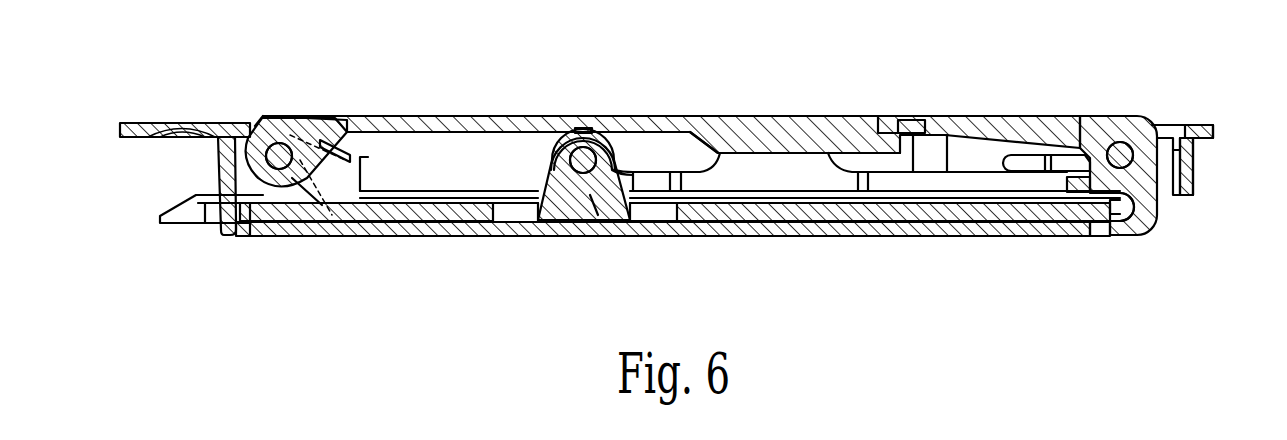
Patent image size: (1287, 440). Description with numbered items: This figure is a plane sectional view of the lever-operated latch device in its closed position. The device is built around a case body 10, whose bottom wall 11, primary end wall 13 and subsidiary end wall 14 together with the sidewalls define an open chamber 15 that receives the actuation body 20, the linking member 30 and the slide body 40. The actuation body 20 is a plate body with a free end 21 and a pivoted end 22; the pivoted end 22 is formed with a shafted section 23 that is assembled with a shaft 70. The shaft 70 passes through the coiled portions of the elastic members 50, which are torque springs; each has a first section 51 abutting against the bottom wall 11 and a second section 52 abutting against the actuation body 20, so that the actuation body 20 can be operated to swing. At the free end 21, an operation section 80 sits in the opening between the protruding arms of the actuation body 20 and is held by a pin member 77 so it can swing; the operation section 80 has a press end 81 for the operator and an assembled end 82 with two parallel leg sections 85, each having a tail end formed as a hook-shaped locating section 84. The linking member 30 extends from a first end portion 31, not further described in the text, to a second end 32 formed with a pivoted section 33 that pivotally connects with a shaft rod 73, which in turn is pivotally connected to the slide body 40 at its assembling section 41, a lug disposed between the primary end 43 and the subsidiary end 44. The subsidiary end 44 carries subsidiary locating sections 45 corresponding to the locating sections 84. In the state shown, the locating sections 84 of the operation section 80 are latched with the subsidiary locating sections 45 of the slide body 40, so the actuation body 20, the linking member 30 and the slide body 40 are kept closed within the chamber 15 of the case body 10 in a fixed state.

The case body 10 is at (178, 121).
The bottom wall 11 is at (372, 238).
The primary end wall 13 is at (221, 172).
The subsidiary end wall 14 is at (1194, 166).
The open chamber 15 is at (1178, 125).
The actuation body 20 is at (480, 114).
The free end 21 is at (886, 116).
The pivoted end 22 is at (360, 116).
The shafted section 23 is at (243, 226).
The linking member 30 is at (798, 226).
The slider bottom portion 31 is at (1030, 226).
The second end 32 is at (662, 128).
The pivoted section 33 is at (607, 128).
The slide body 40 is at (867, 228).
The assembling section 41 is at (605, 226).
The primary end 43 is at (285, 226).
The subsidiary end 44 is at (1062, 228).
The subsidiary locating sections 45 is at (1100, 238).
The elastic members 50 is at (298, 126).
The first section 51 is at (318, 226).
The second section 52 is at (343, 128).
The shaft 70 is at (262, 128).
The shaft rod 73 is at (577, 224).
The pin member 77 is at (1113, 118).
The operation section 80 is at (1040, 114).
The press end 81 is at (963, 118).
The assembled end 82 is at (1150, 118).
The locating section 84 is at (1138, 238).
The leg sections 85 is at (1190, 192).